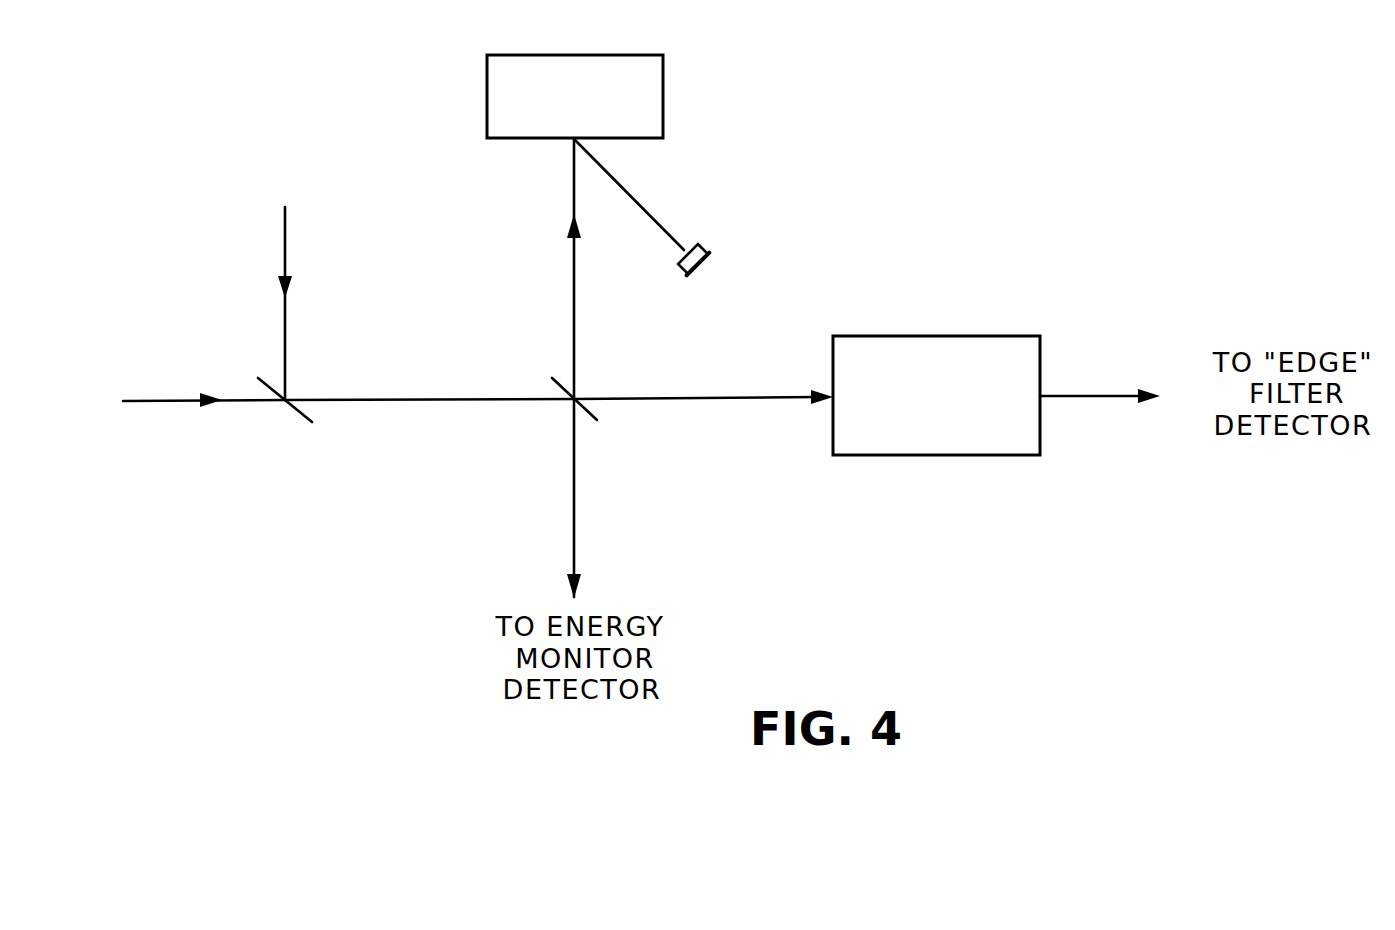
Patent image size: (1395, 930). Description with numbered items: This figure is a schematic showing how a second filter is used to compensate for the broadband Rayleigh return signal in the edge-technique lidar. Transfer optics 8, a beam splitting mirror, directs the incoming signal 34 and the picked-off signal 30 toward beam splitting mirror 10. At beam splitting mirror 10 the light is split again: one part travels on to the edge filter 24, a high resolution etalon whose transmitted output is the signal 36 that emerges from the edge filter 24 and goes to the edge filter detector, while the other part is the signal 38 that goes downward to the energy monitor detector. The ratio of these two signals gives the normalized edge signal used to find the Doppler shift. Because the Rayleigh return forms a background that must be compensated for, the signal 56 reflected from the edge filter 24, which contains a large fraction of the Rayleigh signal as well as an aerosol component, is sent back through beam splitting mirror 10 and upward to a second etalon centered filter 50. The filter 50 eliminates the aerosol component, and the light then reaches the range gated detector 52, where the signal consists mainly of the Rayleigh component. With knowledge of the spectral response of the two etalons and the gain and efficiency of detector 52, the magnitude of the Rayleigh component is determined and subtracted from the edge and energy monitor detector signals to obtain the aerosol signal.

The picked-off signal 30 is at (147, 400).
The transfer optics 8 is at (293, 412).
The incoming signal 34 is at (285, 253).
The beam splitting mirror 10 is at (561, 380).
The reflected signal 56 is at (574, 268).
The second etalon centered filter 50 is at (664, 92).
The range gated detector 52 is at (703, 268).
The signal measured by energy monitor detector 38 is at (574, 521).
The edge filter 24 is at (945, 456).
The signal emerging from edge filter 36 is at (1091, 396).